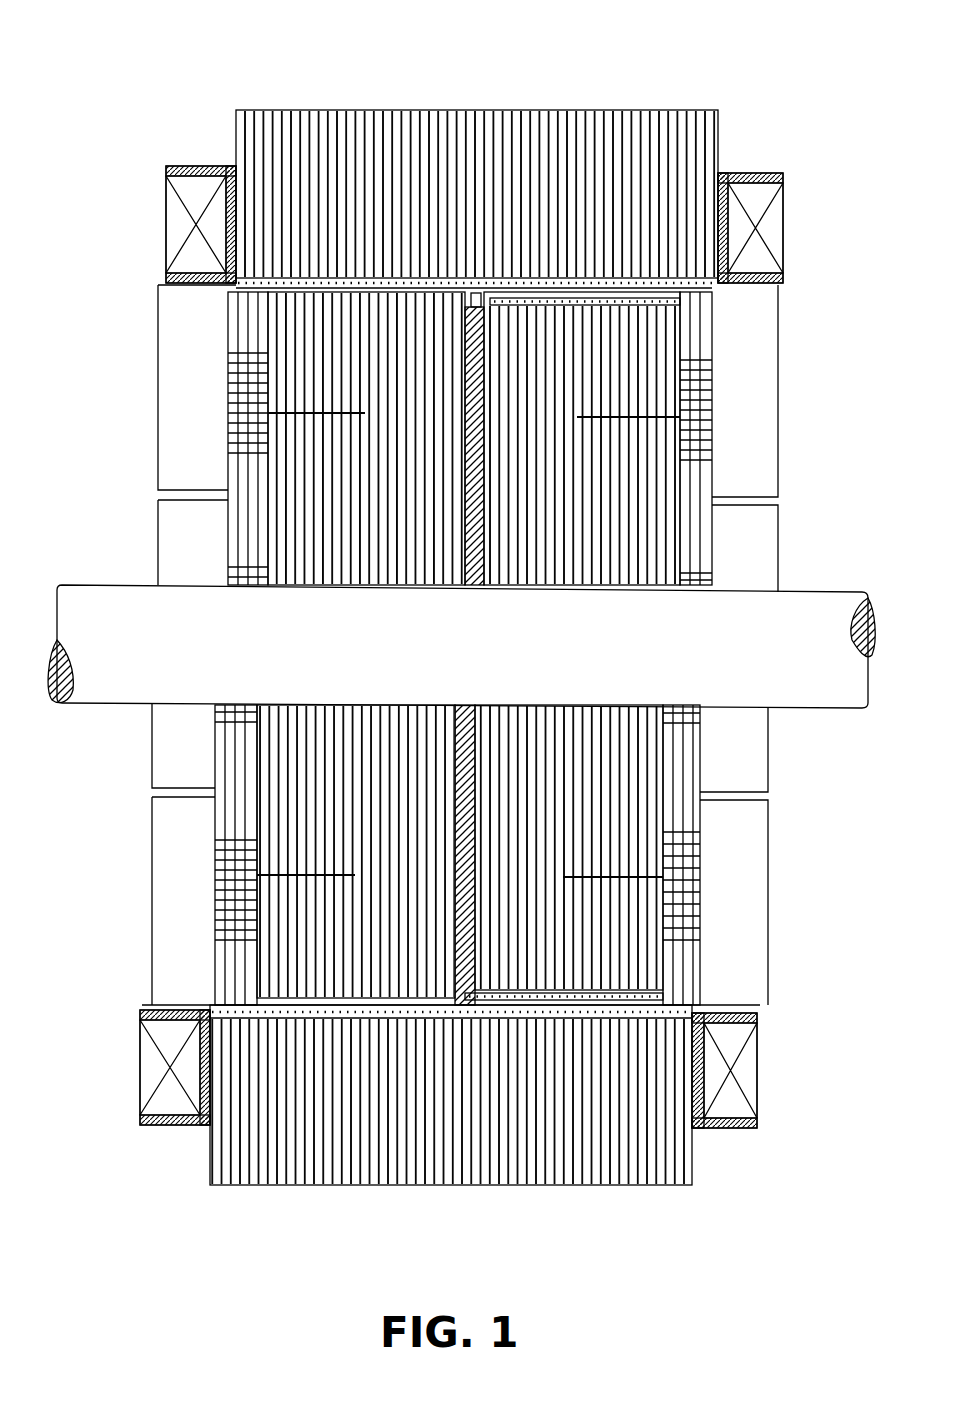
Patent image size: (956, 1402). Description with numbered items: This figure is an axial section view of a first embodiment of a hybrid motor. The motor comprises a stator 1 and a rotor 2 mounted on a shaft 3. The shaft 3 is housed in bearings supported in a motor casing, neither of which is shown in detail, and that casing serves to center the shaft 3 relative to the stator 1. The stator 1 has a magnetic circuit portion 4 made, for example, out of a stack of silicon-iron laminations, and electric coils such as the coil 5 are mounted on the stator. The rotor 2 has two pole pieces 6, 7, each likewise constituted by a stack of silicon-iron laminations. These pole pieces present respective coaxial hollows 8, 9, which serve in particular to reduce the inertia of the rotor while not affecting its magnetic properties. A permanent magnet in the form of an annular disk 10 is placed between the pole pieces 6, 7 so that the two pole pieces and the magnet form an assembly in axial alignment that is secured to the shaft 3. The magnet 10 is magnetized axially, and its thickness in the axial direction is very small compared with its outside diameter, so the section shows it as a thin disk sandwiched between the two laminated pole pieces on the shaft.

The stator 1 is at (311, 108).
The rotor 2 is at (252, 332).
The shaft 3 is at (97, 600).
The magnetic circuit portion 4 is at (594, 125).
The electric coil 5 is at (192, 226).
The pole piece 6 is at (264, 851).
The pole piece 7 is at (643, 852).
The coaxial hollow 8 is at (315, 866).
The coaxial hollow 9 is at (607, 862).
The permanent magnet 10 is at (467, 705).